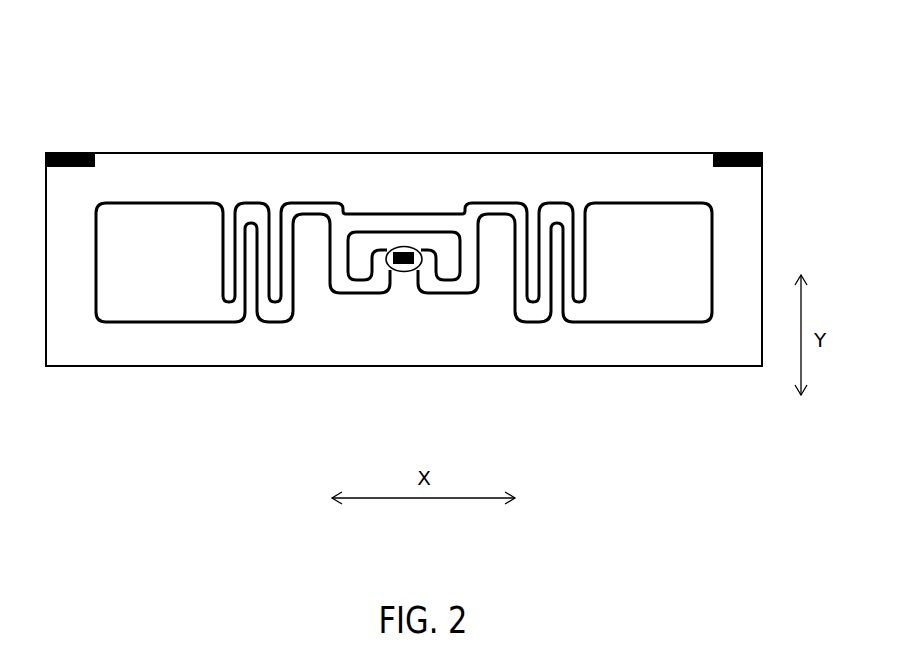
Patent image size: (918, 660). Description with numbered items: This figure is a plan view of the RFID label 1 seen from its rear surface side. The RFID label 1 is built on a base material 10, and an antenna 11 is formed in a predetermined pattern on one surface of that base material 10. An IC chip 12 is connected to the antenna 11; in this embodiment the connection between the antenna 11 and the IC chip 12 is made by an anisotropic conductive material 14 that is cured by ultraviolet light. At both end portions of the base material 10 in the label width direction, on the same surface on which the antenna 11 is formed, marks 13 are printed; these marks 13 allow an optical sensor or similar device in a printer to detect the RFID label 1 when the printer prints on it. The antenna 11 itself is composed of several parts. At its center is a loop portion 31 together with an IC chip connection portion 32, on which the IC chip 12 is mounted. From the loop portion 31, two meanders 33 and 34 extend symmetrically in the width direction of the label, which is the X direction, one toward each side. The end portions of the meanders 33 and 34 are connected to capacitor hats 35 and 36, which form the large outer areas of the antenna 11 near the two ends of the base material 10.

The RFID label 1 is at (405, 213).
The base material 10 is at (514, 175).
The antenna 11 is at (404, 249).
The IC chip 12 is at (404, 251).
The marks 13 is at (69, 152).
The anisotropic conductive material 14 is at (388, 250).
The loop portion 31 is at (438, 211).
The IC chip connection portion 32 is at (391, 249).
The meander 33 is at (223, 335).
The meander 34 is at (593, 335).
The capacitor hat 35 is at (128, 306).
The capacitor hat 36 is at (687, 303).